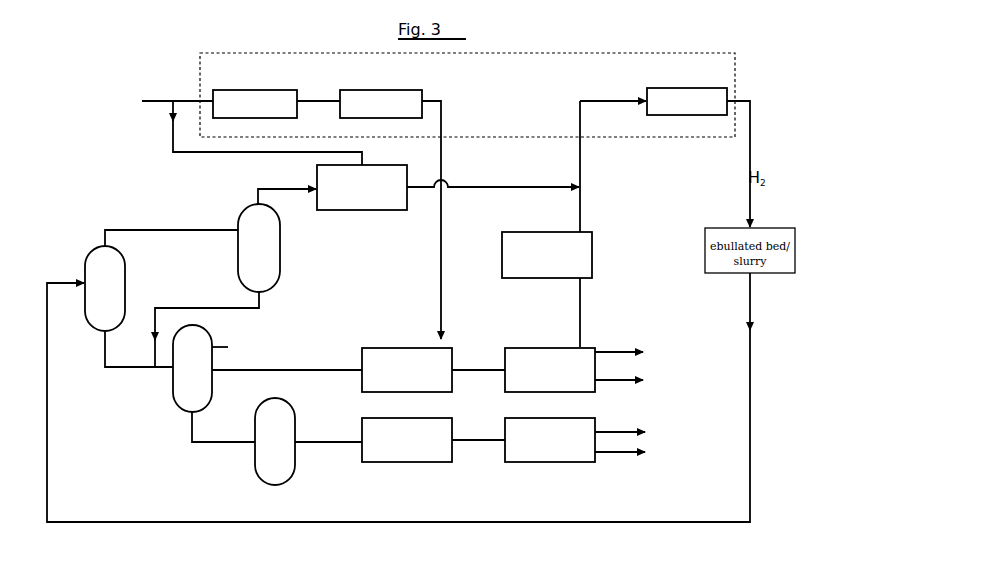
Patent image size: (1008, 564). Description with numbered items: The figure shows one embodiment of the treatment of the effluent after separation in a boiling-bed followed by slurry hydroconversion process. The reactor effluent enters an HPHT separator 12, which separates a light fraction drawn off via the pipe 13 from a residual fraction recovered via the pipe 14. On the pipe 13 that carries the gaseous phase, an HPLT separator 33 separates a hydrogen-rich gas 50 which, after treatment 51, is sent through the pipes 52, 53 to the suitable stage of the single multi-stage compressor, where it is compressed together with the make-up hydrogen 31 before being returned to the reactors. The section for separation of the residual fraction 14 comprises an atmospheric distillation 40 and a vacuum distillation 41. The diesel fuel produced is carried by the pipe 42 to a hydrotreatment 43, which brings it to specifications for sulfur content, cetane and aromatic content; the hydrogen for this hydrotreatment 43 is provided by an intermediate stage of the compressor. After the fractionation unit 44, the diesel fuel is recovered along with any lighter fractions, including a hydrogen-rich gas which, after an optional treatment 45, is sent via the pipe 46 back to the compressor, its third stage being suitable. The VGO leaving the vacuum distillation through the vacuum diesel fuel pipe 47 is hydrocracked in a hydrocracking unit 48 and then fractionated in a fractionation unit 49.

The HPHT separator 12 is at (85, 264).
The pipe 13 is at (132, 229).
The pipe 14 is at (125, 370).
The make-up hydrogen 31 is at (152, 104).
The HPLT separator 33 is at (281, 245).
The atmospheric distillation 40 is at (173, 398).
The vacuum distillation 41 is at (256, 470).
The pipe 42 is at (240, 372).
The hydrotreatment 43 is at (389, 348).
The fractionation unit 44 is at (518, 348).
The treatment 45 is at (593, 250).
The pipe 46 is at (582, 206).
The vacuum diesel fuel pipe 47 is at (316, 445).
The hydrocracking 48 is at (405, 463).
The fractionation 49 is at (545, 463).
The hydrogen-rich gas 50 is at (297, 184).
The treatment 51 is at (380, 211).
The pipe 52 is at (470, 192).
The pipe 53 is at (181, 158).